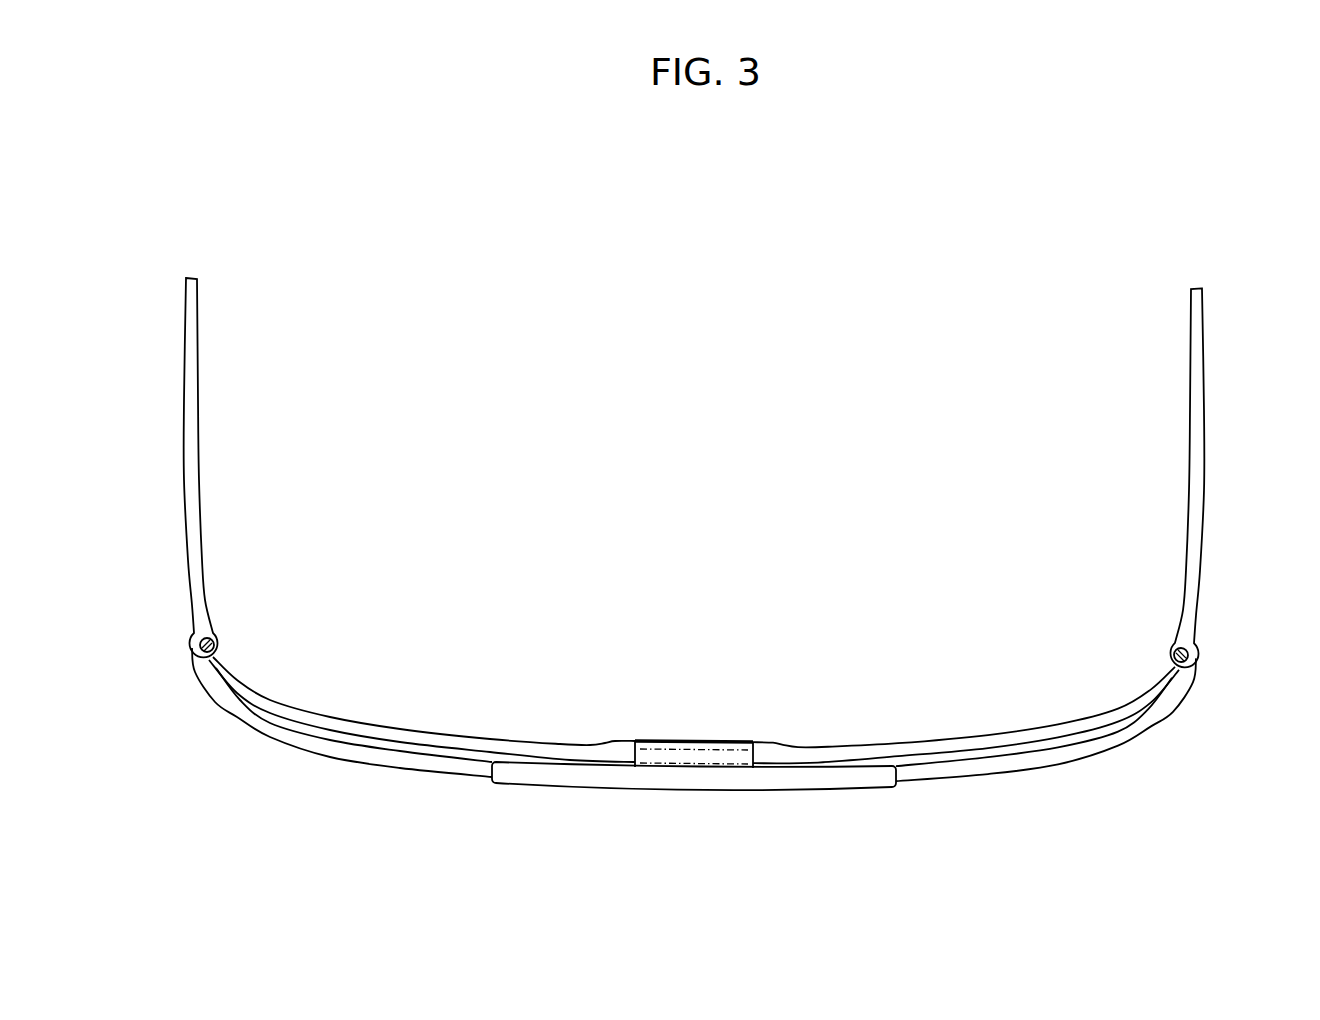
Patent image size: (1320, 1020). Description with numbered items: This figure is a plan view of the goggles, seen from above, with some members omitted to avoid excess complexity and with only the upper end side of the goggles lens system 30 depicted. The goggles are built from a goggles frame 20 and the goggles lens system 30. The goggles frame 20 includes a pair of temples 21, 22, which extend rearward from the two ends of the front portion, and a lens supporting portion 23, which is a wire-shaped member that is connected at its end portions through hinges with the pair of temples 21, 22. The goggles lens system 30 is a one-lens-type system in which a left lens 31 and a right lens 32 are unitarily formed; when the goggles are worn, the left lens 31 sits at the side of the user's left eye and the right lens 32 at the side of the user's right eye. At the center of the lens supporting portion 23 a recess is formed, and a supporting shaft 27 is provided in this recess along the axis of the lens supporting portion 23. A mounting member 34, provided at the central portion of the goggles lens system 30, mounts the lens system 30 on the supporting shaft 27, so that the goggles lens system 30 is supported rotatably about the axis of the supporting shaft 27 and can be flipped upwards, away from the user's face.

The goggles frame 20 is at (1213, 575).
The temple 21 is at (1198, 443).
The temple 22 is at (199, 432).
The lens supporting portion 23 is at (430, 732).
The supporting shaft 27 is at (697, 740).
The goggles lens system 30 is at (288, 782).
The left lens 31 is at (1032, 770).
The right lens 32 is at (384, 778).
The mounting member 34 is at (696, 790).